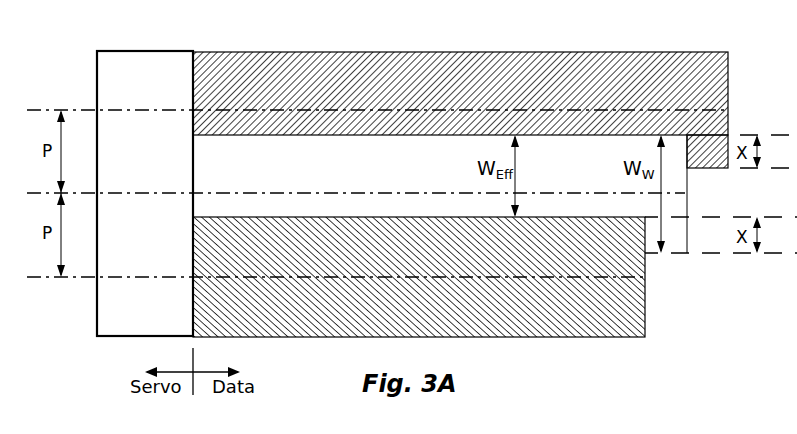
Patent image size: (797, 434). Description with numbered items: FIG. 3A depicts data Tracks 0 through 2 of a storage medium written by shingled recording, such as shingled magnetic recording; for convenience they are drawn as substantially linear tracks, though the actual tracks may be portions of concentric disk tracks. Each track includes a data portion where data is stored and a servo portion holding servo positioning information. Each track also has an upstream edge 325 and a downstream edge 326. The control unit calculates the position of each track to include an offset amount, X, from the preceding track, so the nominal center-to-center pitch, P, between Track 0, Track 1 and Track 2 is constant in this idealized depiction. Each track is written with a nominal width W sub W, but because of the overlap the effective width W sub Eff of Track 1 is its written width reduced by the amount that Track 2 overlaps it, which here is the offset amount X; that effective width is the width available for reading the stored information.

The upstream edge 325 is at (473, 80).
The downstream edge 326 is at (699, 168).
The Track 0 is at (718, 34).
The Track 1 is at (356, 172).
The Track 2 is at (419, 277).